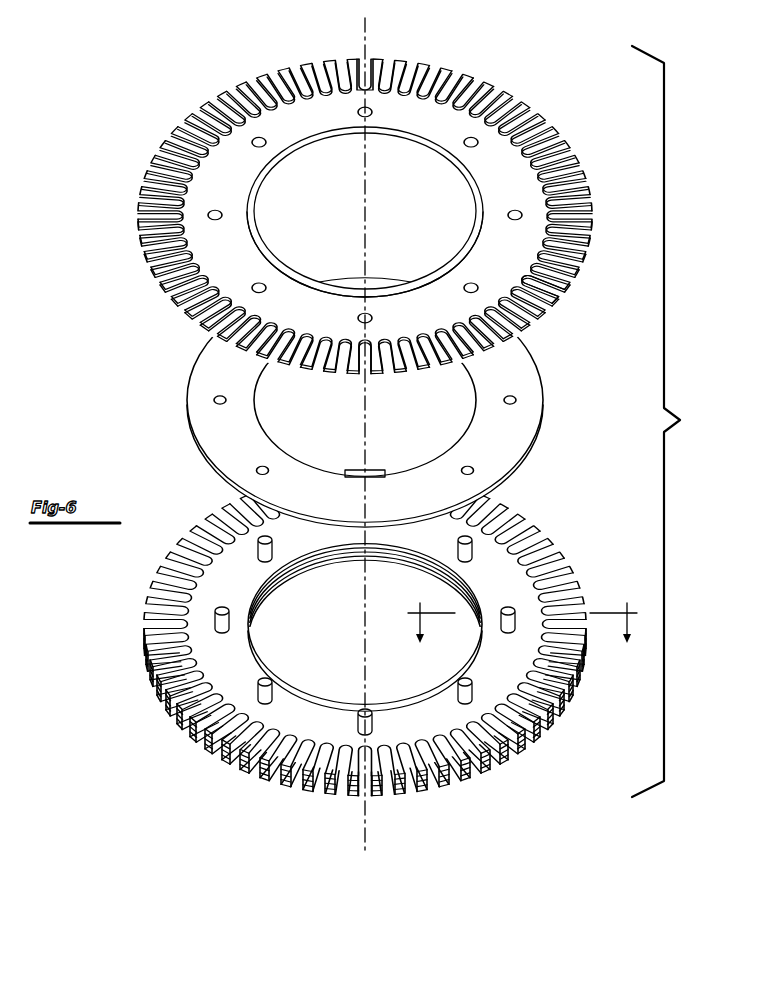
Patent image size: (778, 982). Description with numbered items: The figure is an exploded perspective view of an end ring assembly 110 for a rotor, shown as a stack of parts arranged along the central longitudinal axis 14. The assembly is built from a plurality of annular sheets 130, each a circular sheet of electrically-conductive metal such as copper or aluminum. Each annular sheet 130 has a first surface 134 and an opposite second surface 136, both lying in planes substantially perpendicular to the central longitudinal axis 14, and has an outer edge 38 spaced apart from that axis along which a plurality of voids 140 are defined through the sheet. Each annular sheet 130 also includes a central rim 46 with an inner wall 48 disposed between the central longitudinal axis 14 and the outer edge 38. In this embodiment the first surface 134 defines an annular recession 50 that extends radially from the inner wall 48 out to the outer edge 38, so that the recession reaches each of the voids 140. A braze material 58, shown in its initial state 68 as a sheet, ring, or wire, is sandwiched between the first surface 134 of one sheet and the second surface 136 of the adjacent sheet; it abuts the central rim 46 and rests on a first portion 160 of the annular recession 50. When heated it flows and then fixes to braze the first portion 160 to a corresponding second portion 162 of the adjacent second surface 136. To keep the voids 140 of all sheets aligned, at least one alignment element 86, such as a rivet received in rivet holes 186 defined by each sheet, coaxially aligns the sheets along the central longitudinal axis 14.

The central longitudinal axis 14 is at (390, 657).
The outer edge 38 is at (355, 216).
The central rim 46 is at (274, 157).
The inner wall 48 is at (401, 291).
The annular recession 50 is at (491, 151).
The braze material 58 is at (389, 402).
The initial state 68 is at (347, 402).
The alignment element 86 is at (472, 549).
The end ring assembly 110 is at (674, 421).
The annular sheet 130 is at (538, 138).
The first surface 134 is at (578, 185).
The second surface 136 is at (170, 310).
The void 140 is at (558, 300).
The first portion 160 is at (507, 279).
The second portion 162 is at (442, 162).
The rivet hole 186 is at (514, 386).